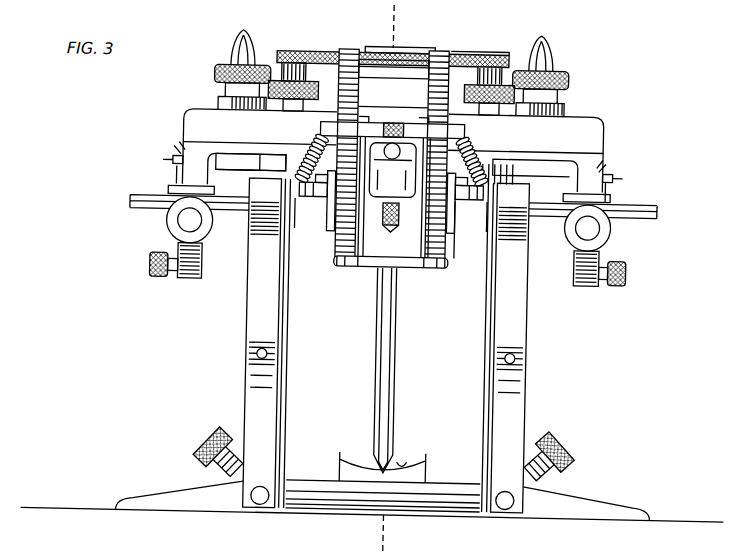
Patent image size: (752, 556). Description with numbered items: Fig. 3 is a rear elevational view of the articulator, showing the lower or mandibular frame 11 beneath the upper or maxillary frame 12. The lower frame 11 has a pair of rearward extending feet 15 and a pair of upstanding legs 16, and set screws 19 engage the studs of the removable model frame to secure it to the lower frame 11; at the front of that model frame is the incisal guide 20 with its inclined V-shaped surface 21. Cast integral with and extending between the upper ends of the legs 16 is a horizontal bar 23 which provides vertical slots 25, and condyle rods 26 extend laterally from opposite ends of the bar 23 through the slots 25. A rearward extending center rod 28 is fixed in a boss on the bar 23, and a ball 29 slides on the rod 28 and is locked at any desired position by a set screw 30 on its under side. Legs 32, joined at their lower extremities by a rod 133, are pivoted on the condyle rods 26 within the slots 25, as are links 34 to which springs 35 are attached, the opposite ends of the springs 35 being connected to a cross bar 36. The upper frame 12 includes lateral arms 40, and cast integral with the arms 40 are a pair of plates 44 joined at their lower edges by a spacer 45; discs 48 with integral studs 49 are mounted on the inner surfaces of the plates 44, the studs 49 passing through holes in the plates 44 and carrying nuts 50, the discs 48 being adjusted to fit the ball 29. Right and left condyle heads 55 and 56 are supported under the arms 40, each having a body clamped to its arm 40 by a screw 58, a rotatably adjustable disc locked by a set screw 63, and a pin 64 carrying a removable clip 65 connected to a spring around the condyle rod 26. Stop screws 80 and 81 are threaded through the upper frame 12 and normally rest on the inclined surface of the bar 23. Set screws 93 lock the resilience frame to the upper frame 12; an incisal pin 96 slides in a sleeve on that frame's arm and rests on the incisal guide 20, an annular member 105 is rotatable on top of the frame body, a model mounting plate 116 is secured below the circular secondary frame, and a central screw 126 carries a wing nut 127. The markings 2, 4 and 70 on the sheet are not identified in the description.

The work space 2 is at (337, 363).
The section line 4- 4 is at (396, 25).
The lower or mandibular frame 11 is at (533, 396).
The upper or maxillary frame 12 is at (575, 113).
The rearward extending feet 15 is at (188, 498).
The upstanding legs 16 is at (258, 327).
The set screws 19 is at (216, 439).
The incisal guide 20 is at (430, 480).
The inclined V-shaped surface 21 is at (407, 467).
The horizontal bar 23 is at (466, 238).
The vertical slots 25 is at (296, 235).
The condyle rods 26 is at (126, 203).
The center rod 28 is at (374, 150).
The ball 29 is at (381, 184).
The set screw 30 is at (387, 224).
The legs 32 is at (289, 436).
The links 34 is at (294, 206).
The springs 35 is at (312, 160).
The cross bar 36 is at (388, 124).
The lateral arms 40 is at (586, 130).
The plates 44 is at (342, 262).
The spacer 45 is at (362, 258).
The discs 48 is at (356, 268).
The studs 49 is at (271, 226).
The nuts 50 is at (318, 195).
The right condyle head 55 is at (587, 289).
The left condyle head 56 is at (187, 282).
The screw 58 is at (236, 42).
The set screw 63 is at (147, 273).
The pin 64 is at (164, 167).
The removable clip 65 is at (169, 151).
The hand wheel 70 is at (165, 232).
The stop screw 80 is at (325, 80).
The stop screw 81 is at (452, 75).
The set screws 93 is at (283, 82).
The incisal pin 96 is at (392, 374).
The annular member 105 is at (465, 57).
The model mounting plate 116 is at (235, 170).
The screw 126 is at (398, 52).
The wing nut 127 is at (370, 53).
The rod 133 is at (327, 499).